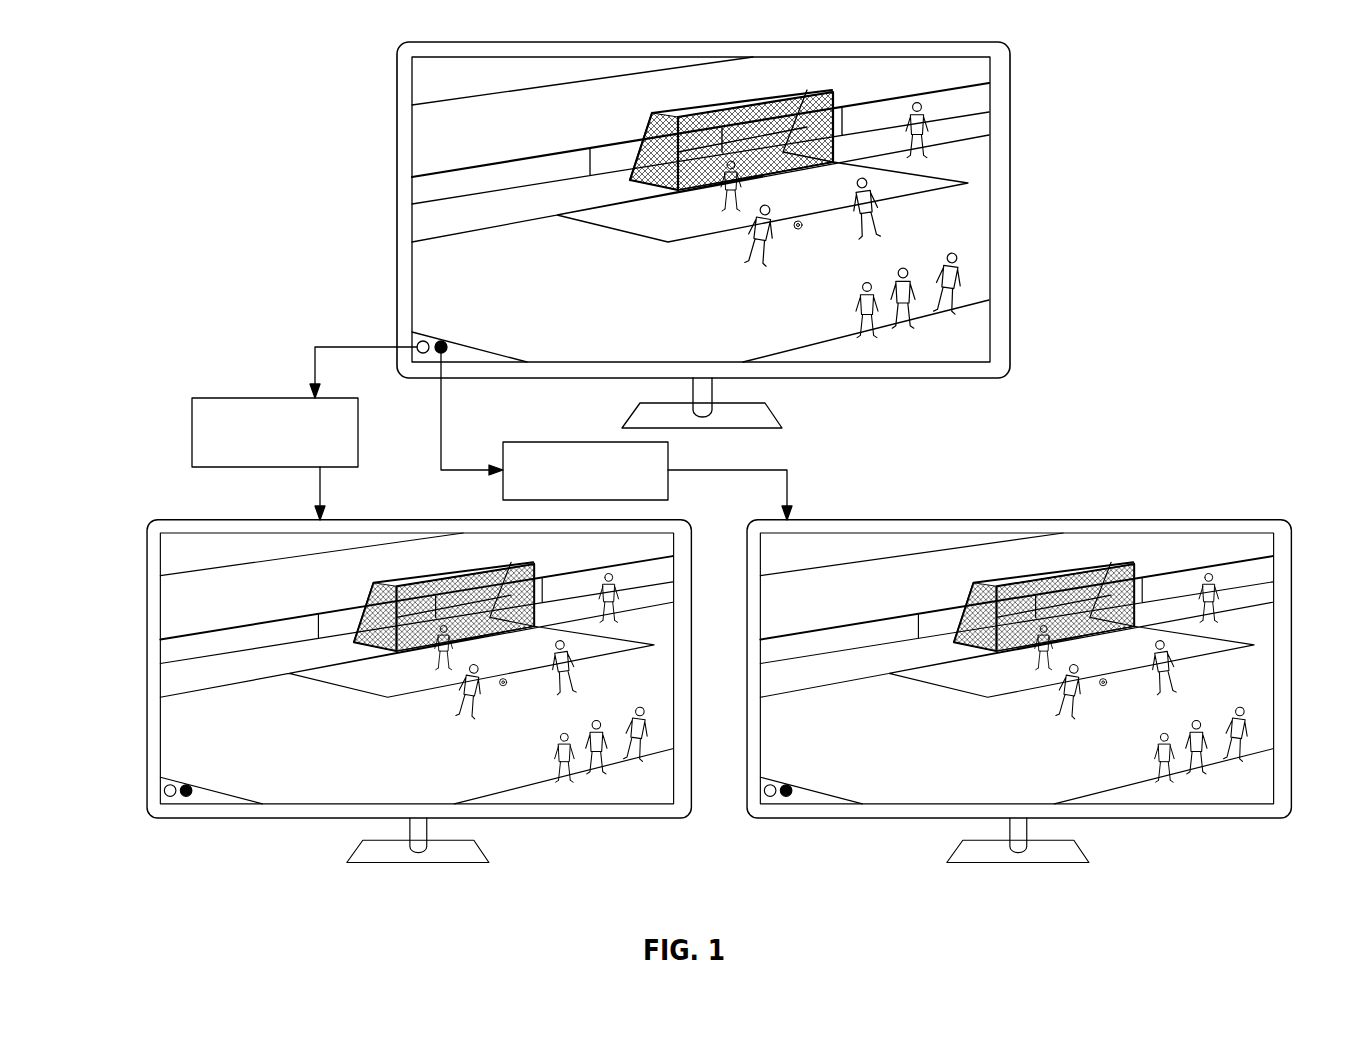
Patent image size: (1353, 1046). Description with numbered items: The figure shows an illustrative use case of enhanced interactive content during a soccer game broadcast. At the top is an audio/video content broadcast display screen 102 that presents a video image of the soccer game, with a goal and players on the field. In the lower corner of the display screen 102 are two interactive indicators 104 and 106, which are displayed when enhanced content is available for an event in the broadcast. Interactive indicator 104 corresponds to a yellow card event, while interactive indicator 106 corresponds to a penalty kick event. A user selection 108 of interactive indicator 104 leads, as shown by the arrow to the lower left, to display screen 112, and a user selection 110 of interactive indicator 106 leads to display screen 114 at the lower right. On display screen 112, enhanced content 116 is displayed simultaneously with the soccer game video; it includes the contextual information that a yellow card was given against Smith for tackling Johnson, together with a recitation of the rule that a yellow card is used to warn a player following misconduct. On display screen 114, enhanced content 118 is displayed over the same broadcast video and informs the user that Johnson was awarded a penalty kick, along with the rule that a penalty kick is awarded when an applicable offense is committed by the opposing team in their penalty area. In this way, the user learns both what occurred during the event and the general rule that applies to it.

The display screen 102 is at (958, 260).
The interactive indicator 104 is at (420, 341).
The interactive indicator 106 is at (441, 341).
The user selection 108 is at (262, 398).
The user selection 110 is at (568, 442).
The display screen 112 is at (222, 818).
The display screen 114 is at (823, 818).
The enhanced content 116 is at (340, 665).
The enhanced content 118 is at (925, 663).